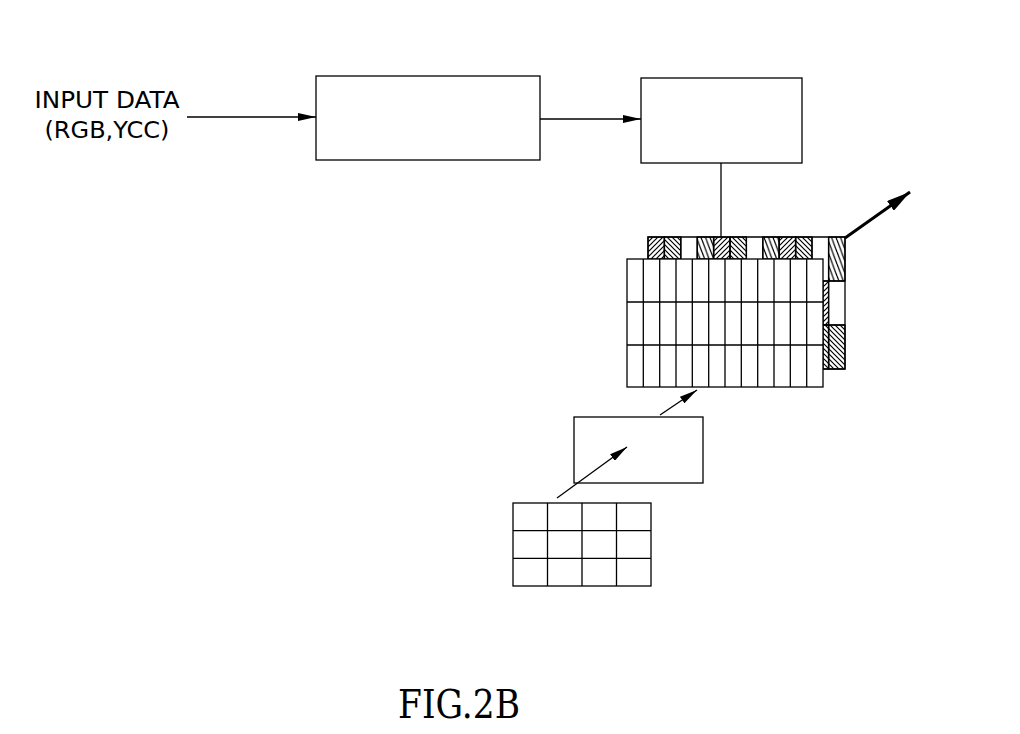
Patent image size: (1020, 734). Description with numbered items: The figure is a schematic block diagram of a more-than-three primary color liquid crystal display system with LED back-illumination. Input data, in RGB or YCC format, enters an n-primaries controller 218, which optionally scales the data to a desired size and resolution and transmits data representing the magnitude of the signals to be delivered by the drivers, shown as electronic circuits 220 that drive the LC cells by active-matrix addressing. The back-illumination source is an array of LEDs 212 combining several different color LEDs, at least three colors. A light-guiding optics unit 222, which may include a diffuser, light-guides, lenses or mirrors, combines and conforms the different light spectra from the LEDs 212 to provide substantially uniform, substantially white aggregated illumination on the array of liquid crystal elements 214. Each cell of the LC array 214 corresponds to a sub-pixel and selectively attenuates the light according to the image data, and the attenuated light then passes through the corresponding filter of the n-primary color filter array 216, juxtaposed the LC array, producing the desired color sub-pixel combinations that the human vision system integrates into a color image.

The LEDs 212 is at (513, 513).
The array of liquid crystal elements 214 is at (627, 268).
The n-primary color filter array 216 is at (744, 237).
The n-primaries controller 218 is at (447, 76).
The electronic circuits 220 is at (706, 78).
The light-guiding optics unit 222 is at (703, 447).